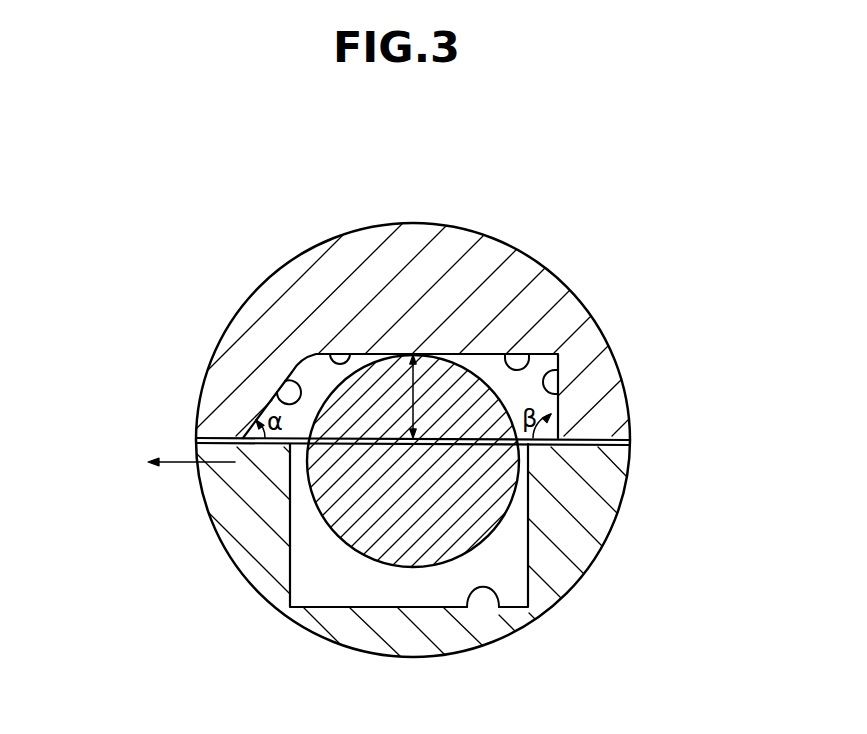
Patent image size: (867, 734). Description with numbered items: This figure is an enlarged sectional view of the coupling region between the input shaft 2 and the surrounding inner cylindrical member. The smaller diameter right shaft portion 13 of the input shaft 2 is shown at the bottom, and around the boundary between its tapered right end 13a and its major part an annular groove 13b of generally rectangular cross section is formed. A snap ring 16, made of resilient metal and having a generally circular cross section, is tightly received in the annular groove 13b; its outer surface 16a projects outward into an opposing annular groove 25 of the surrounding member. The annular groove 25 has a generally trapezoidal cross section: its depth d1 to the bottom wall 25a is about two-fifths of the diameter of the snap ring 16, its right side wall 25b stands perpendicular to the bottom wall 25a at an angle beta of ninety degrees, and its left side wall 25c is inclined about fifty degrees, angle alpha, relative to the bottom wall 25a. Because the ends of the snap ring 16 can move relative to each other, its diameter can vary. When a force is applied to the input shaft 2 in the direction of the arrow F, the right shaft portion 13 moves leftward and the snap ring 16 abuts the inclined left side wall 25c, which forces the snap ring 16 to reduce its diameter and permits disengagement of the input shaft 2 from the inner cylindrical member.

The input shaft 2 is at (600, 326).
The right shaft portion 13 is at (207, 524).
The tapered right end 13a is at (560, 580).
The annular groove 13b is at (501, 608).
The snap ring 16 is at (483, 488).
The outer peripheral surface of shaft 16a is at (330, 392).
The annular groove 25 is at (527, 362).
The bottom wall 25a is at (350, 356).
The right side wall 25b is at (562, 368).
The left side wall 25c is at (280, 400).
The distance d1 is at (437, 353).
The arrow F is at (183, 480).